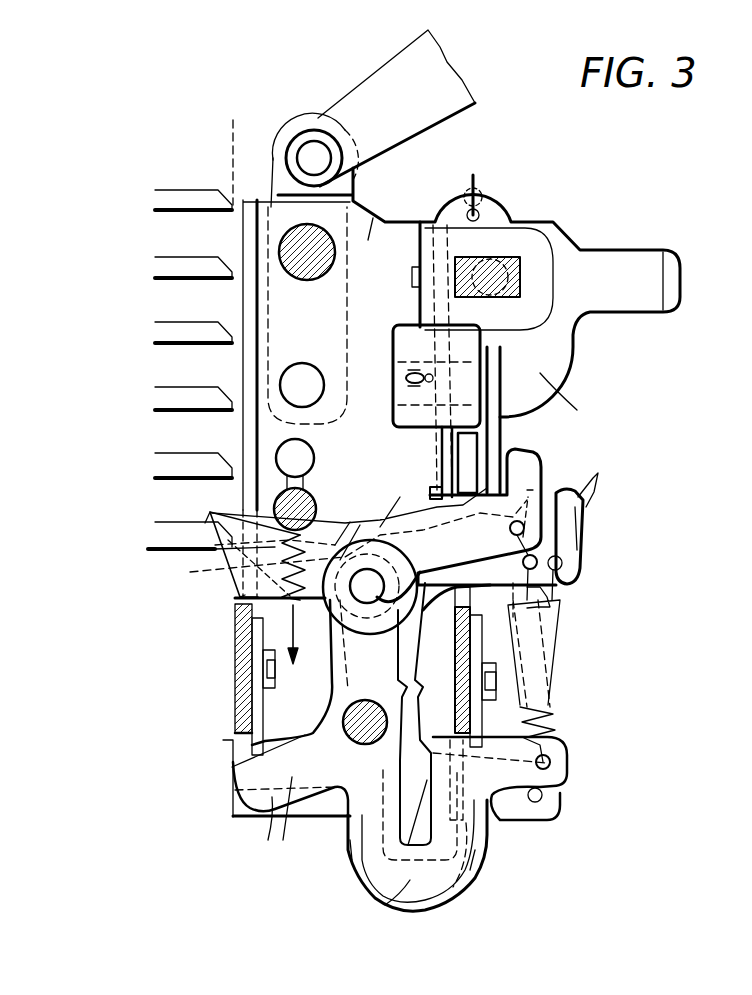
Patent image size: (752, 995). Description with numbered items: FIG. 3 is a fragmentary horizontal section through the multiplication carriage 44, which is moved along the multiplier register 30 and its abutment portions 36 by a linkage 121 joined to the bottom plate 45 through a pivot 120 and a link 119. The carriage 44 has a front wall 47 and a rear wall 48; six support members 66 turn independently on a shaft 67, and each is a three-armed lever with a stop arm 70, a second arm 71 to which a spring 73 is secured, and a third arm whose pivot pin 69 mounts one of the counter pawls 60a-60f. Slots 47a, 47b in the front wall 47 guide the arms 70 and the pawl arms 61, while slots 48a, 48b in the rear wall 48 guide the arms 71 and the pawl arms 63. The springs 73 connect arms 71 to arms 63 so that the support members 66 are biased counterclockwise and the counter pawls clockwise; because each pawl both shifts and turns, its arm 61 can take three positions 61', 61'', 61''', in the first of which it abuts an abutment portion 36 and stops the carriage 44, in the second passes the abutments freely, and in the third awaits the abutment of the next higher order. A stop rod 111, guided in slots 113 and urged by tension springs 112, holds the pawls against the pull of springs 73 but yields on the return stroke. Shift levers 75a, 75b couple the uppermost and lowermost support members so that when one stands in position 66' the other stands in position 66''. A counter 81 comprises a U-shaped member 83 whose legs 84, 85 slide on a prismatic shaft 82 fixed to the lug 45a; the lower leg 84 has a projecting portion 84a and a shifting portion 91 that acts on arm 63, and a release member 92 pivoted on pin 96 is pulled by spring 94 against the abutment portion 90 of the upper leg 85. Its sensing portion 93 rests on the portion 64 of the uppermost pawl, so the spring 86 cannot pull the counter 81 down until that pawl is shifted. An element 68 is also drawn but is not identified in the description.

The multiplier register 30 is at (137, 350).
The abutment portion 36 is at (142, 500).
The multiplication carriage 44 is at (225, 825).
The bottom wall 45 is at (395, 232).
The horizontal lug 45a is at (513, 312).
The front wall 47 is at (243, 664).
The slot 47a is at (245, 737).
The slot 47b is at (248, 455).
The rear wall 48 is at (470, 588).
The slot 48a is at (510, 822).
The slot 48b is at (523, 455).
The counter pawls 60a-60f is at (369, 532).
The arm 61 is at (225, 554).
The abutting position of arm 61' is at (220, 584).
The free position of arm 61'' is at (211, 522).
The passed position of arm 61''' is at (195, 509).
The arm 63 is at (590, 500).
The portion 64 is at (425, 505).
The support member 66 is at (391, 862).
The first position of support member 66' is at (498, 872).
The second position of support member 66'' is at (321, 853).
The shaft 67 is at (365, 735).
The lever arm 68 is at (432, 665).
The pivot pin 69 is at (345, 595).
The stop arm 70 is at (269, 845).
The second arm 71 is at (395, 903).
The spring 73 is at (548, 650).
The shift lever 75a is at (256, 645).
The shift lever 75b is at (478, 665).
The counter 81 is at (592, 337).
The prismatic shaft 82 is at (505, 255).
The U-shaped member 83 is at (420, 310).
The lower leg 84 is at (569, 398).
The projecting portion 84a is at (660, 270).
The upper leg 85 is at (545, 240).
The spring 86 is at (482, 195).
The abutment portion 90 is at (405, 415).
The shifting portion 91 is at (523, 467).
The release member 92 is at (442, 455).
The sensing end portion 93 is at (432, 490).
The spring 94 is at (406, 378).
The pivot pin 96 is at (412, 280).
The stop rod 111 is at (308, 500).
The tension springs 112 is at (280, 605).
The guide slots 113 is at (312, 455).
The link 119 is at (276, 140).
The pivot 120 is at (300, 380).
The linkage 121 is at (415, 68).